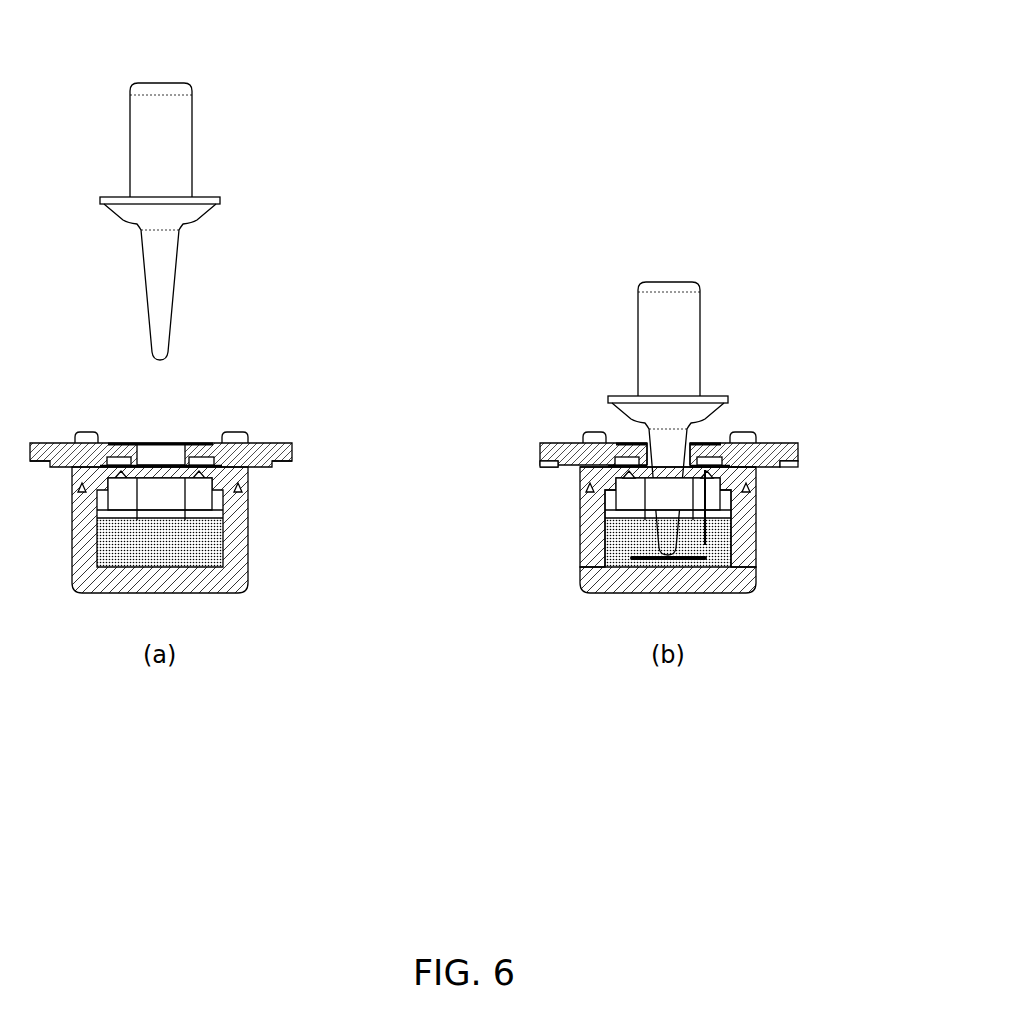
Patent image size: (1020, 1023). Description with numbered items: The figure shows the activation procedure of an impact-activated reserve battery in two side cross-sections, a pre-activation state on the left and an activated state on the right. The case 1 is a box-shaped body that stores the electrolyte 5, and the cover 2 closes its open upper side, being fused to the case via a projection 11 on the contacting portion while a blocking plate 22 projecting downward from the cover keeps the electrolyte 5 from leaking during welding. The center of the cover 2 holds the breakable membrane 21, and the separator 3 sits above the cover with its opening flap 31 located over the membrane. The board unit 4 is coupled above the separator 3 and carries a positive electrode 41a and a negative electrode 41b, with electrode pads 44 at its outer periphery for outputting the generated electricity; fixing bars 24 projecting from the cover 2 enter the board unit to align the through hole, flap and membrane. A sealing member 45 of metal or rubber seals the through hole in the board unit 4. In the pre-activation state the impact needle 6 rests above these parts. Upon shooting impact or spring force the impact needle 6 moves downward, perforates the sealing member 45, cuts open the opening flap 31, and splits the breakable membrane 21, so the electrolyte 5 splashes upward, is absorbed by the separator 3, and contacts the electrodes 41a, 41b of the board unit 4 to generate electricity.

The case 1 is at (745, 572).
The cover 2 is at (752, 475).
The separator 3 is at (577, 472).
The board unit 4 is at (787, 450).
The electrolyte 5 is at (625, 550).
The impact needle 6 is at (687, 313).
The projection 11 is at (593, 487).
The breakable membrane 21 is at (688, 563).
The blocking plate 22 is at (610, 495).
The fixing bar 24 is at (752, 437).
The opening flap 31 is at (713, 502).
The positive electrode 41a is at (622, 447).
The negative electrode 41b is at (712, 446).
The electrode pad 44 is at (542, 461).
The sealing member 45 is at (705, 462).